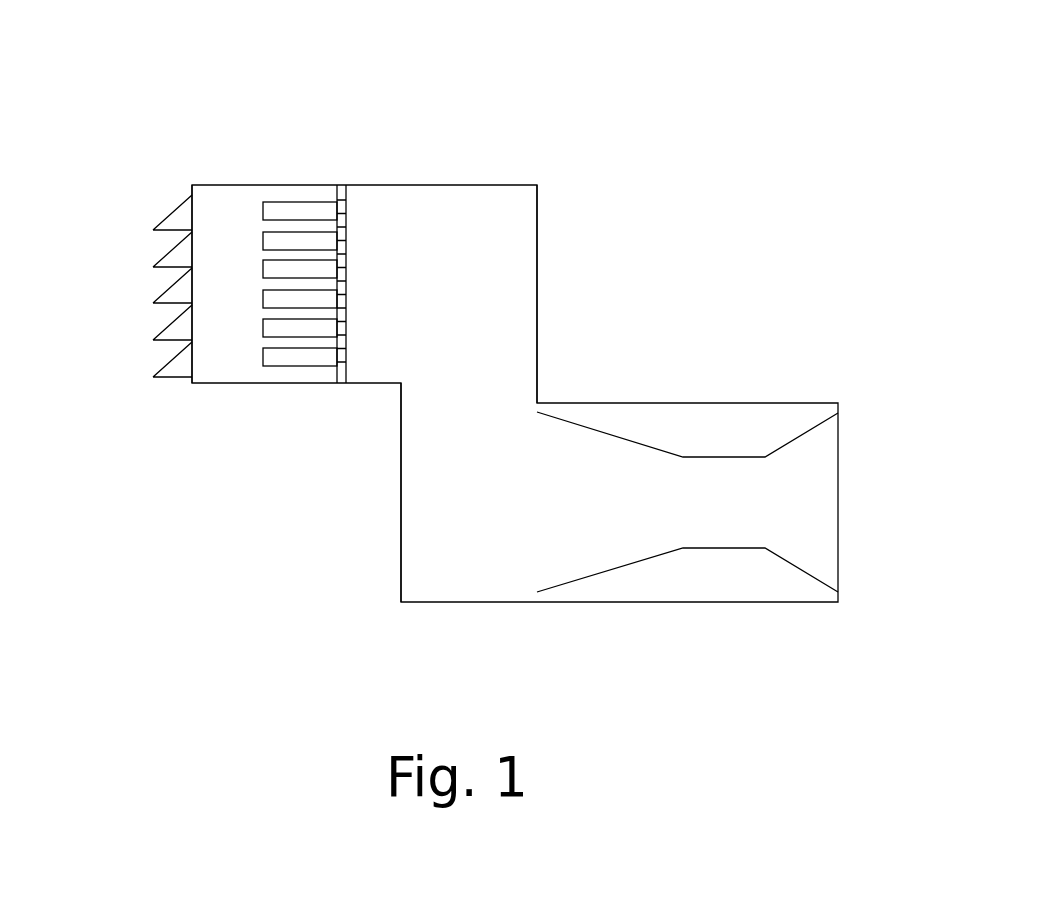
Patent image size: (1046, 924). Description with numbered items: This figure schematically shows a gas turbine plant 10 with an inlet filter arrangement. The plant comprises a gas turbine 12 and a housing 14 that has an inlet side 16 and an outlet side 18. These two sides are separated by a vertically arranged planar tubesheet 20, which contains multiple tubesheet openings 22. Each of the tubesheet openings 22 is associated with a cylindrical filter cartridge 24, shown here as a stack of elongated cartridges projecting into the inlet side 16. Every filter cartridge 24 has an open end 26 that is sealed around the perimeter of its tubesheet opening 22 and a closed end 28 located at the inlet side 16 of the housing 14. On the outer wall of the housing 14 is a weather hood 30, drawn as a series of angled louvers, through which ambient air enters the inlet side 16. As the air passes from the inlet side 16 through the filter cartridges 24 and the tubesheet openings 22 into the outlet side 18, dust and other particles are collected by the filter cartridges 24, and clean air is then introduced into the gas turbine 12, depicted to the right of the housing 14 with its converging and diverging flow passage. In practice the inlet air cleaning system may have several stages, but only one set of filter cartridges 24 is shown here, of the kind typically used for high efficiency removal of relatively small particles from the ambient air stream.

The gas turbine plant 10 is at (753, 118).
The gas turbine 12 is at (722, 473).
The housing 14 is at (518, 228).
The inlet side 16 is at (228, 197).
The outlet side 18 is at (423, 212).
The tubesheet 20 is at (337, 197).
The tubesheet openings 22 is at (347, 208).
The filter cartridge 24 is at (302, 357).
The open end 26 is at (334, 357).
The closed end 28 is at (272, 358).
The weather hood 30 is at (170, 252).